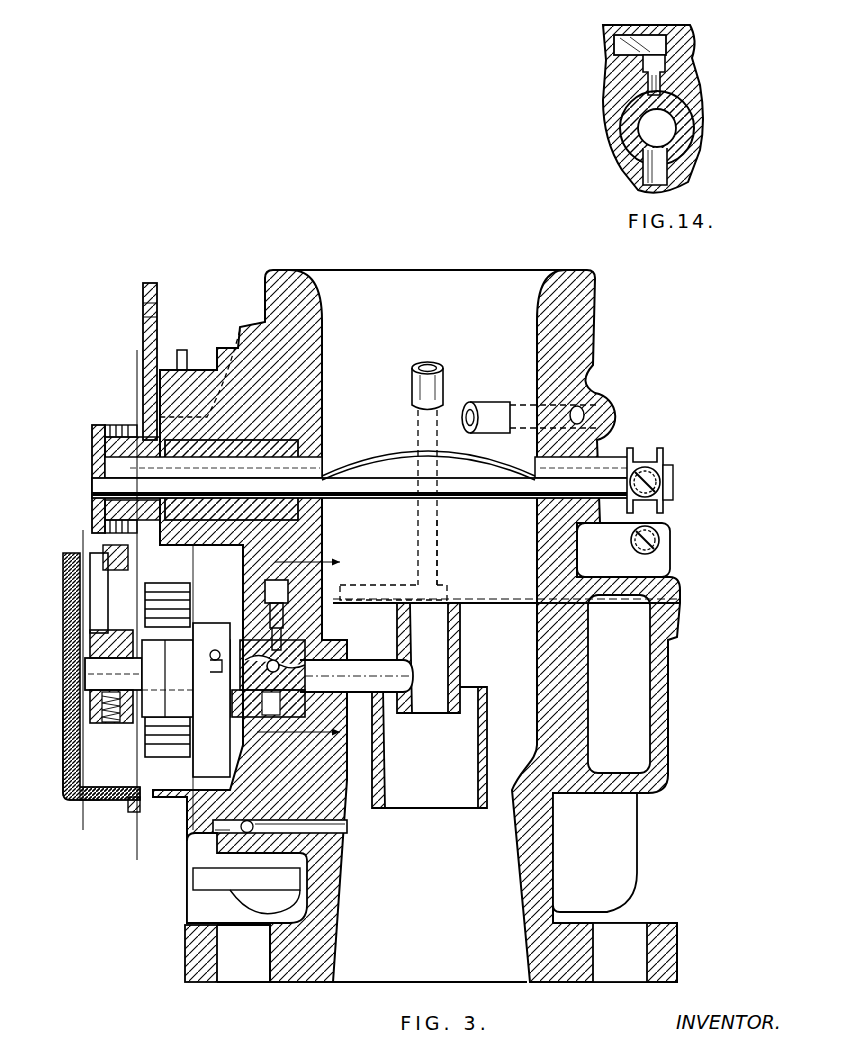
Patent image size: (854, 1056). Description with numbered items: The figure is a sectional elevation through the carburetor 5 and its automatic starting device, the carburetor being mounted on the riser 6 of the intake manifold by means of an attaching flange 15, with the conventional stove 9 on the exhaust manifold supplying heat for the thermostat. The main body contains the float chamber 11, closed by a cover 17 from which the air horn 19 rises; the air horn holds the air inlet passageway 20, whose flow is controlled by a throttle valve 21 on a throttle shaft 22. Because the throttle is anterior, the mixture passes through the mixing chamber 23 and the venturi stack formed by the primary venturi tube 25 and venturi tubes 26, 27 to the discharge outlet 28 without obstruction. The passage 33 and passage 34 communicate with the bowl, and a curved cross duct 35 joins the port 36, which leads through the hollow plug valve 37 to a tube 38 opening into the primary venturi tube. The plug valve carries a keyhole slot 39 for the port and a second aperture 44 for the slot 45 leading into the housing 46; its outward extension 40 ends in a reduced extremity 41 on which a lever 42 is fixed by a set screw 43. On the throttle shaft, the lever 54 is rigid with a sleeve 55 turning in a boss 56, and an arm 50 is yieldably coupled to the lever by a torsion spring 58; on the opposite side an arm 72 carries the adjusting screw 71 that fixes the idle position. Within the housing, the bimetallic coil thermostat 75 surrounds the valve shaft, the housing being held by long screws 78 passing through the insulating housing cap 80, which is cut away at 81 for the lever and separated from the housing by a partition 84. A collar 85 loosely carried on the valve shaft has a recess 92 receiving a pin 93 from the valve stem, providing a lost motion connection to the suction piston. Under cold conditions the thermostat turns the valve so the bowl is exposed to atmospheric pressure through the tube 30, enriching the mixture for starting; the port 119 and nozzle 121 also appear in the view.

In FIG. 3, the carburetor 5 is at (92, 483).
In FIG. 3, the riser 6 is at (134, 367).
In FIG. 3, the stove 9 is at (306, 647).
In FIG. 3, the float chamber 11 is at (650, 692).
In FIG. 3, the attaching flange 15 is at (184, 938).
In FIG. 3, the cover 17 is at (672, 580).
In FIG. 14, the air horn 19 is at (672, 26).
In FIG. 3, the air horn 19 is at (596, 330).
In FIG. 3, the air inlet passageway 20 is at (430, 290).
In FIG. 3, the throttle valve 21 is at (390, 448).
In FIG. 3, the throttle shaft 22 is at (614, 468).
In FIG. 3, the mixing chamber 23 is at (506, 579).
In FIG. 3, the primary venturi tube 25 is at (462, 645).
In FIG. 3, the venturi tube 26 is at (476, 745).
In FIG. 3, the venturi tube 27 is at (512, 815).
In FIG. 3, the discharge outlet 28 is at (383, 965).
In FIG. 3, the tube 30 is at (432, 365).
In FIG. 3, the passage 33 is at (440, 525).
In FIG. 3, the passage 34 is at (410, 575).
In FIG. 14, the curved cross duct 35 is at (662, 50).
In FIG. 3, the curved cross duct 35 is at (292, 592).
In FIG. 3, the port 36 is at (288, 616).
In FIG. 14, the plug valve 37 is at (682, 135).
In FIG. 3, the plug valve 37 is at (300, 648).
In FIG. 3, the tube 38 is at (400, 693).
In FIG. 14, the keyhole slot 39 is at (680, 113).
In FIG. 3, the keyhole slot 39 is at (268, 660).
In FIG. 3, the outward extension 40 is at (118, 724).
In FIG. 3, the reduced extremity 41 is at (88, 686).
In FIG. 3, the lever 42 is at (95, 592).
In FIG. 3, the set screw 43 is at (110, 724).
In FIG. 14, the second aperture 44 is at (660, 160).
In FIG. 3, the second aperture 44 is at (300, 700).
In FIG. 14, the slot 45 is at (662, 182).
In FIG. 3, the slot 45 is at (250, 730).
In FIG. 3, the housing 46 is at (140, 814).
In FIG. 3, the arm 50 is at (90, 444).
In FIG. 3, the lever 54 is at (143, 345).
In FIG. 3, the sleeve 55 is at (288, 440).
In FIG. 3, the boss 56 is at (202, 378).
In FIG. 3, the torsion spring 58 is at (120, 424).
In FIG. 3, the adjusting screw 71 is at (660, 542).
In FIG. 3, the arm 72 is at (660, 518).
In FIG. 3, the bimetallic coil thermostat 75 is at (152, 750).
In FIG. 3, the long screws 78 is at (345, 832).
In FIG. 3, the housing cap 80 is at (62, 776).
In FIG. 3, the cut away 81 is at (72, 553).
In FIG. 3, the partition 84 is at (110, 802).
In FIG. 3, the collar 85 is at (205, 622).
In FIG. 3, the recess 92 is at (208, 666).
In FIG. 3, the pin 93 is at (208, 654).
In FIG. 3, the port 119 is at (584, 413).
In FIG. 3, the nozzle 121 is at (488, 402).